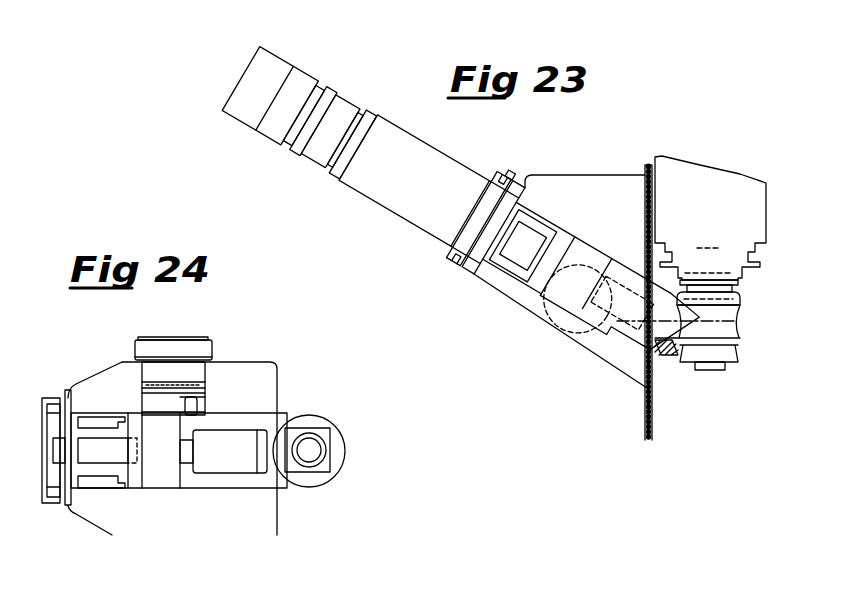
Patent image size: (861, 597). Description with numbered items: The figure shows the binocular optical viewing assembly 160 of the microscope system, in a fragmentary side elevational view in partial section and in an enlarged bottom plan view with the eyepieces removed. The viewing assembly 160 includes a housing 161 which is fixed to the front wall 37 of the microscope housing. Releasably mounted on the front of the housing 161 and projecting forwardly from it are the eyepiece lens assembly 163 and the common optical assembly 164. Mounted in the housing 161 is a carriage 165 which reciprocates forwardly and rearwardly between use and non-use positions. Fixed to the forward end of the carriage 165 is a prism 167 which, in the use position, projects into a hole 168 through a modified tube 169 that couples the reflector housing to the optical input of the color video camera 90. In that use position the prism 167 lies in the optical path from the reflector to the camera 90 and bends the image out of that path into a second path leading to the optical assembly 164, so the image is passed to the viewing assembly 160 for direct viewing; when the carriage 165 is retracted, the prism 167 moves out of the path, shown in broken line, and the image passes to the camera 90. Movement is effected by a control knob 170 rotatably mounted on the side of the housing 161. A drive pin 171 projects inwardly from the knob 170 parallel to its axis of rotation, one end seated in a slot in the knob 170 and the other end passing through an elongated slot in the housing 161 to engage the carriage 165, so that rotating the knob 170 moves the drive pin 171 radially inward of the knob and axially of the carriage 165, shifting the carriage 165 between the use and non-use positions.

In FIG. 23, the binocular optical viewing assembly 160 is at (443, 141).
In FIG. 24, the binocular optical viewing assembly 160 is at (100, 368).
In FIG. 23, the housing 161 is at (572, 186).
In FIG. 24, the housing 161 is at (243, 368).
In FIG. 23, the eyepiece lens assembly 163 is at (276, 141).
In FIG. 23, the common optical assembly 164 is at (401, 229).
In FIG. 23, the carriage 165 is at (622, 341).
In FIG. 24, the carriage 165 is at (220, 477).
In FIG. 23, the prism 167 is at (663, 362).
In FIG. 23, the hole 168 is at (736, 315).
In FIG. 23, the modified tube 169 is at (744, 290).
In FIG. 23, the control knob 170 is at (560, 320).
In FIG. 24, the control knob 170 is at (180, 338).
In FIG. 24, the drive pin 171 is at (203, 412).
In FIG. 23, the front wall 37 is at (645, 214).
In FIG. 23, the color video camera 90 is at (703, 165).